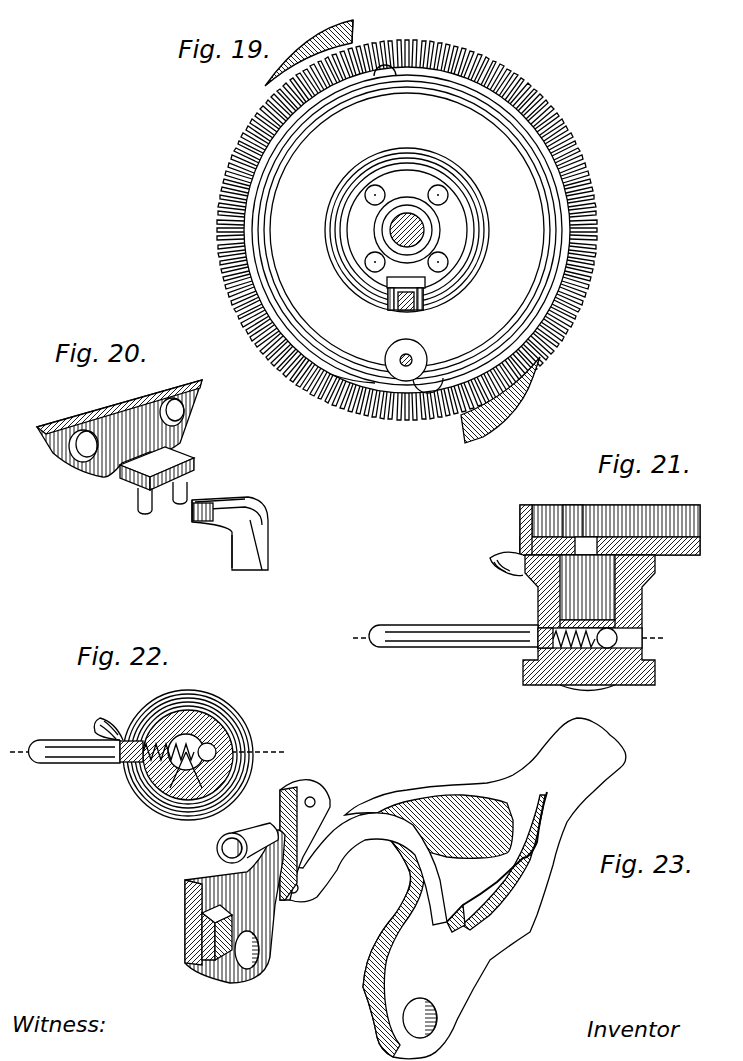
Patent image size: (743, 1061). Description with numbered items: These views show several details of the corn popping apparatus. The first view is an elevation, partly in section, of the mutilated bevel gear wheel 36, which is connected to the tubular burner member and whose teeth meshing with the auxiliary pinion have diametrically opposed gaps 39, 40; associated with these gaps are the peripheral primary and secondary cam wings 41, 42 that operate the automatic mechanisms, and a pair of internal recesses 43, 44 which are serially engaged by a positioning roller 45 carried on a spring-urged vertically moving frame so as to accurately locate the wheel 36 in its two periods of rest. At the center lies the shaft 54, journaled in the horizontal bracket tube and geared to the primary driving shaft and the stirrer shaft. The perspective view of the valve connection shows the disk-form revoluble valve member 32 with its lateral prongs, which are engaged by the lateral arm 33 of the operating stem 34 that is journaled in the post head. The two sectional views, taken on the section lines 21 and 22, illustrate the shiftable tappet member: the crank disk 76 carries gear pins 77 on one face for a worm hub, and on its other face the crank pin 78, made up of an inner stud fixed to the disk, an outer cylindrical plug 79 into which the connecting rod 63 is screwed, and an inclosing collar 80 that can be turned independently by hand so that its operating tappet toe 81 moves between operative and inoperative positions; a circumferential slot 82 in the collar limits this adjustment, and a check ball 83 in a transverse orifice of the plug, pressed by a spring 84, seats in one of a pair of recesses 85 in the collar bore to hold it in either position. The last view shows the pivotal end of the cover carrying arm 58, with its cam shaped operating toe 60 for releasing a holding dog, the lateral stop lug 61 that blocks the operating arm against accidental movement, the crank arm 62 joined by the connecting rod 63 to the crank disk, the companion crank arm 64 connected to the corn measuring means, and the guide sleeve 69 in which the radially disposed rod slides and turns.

In FIG. 22, the section line 21— 21 is at (147, 754).
In FIG. 21, the section line 22— 22 is at (505, 639).
In FIG. 19, the revoluble valve member 32 is at (355, 222).
In FIG. 20, the revoluble valve member 32 is at (113, 407).
In FIG. 19, the lateral arm 33 is at (420, 305).
In FIG. 20, the lateral arm 33 is at (213, 497).
In FIG. 20, the operating stem 34 is at (272, 540).
In FIG. 19, the bevel gear wheel 36 is at (222, 219).
In FIG. 19, the gap 39 is at (428, 72).
In FIG. 19, the gap 40 is at (361, 385).
In FIG. 19, the primary cam wing 41 is at (339, 30).
In FIG. 19, the secondary cam wing 42 is at (490, 430).
In FIG. 19, the internal recess 43 is at (382, 80).
In FIG. 19, the internal recess 44 is at (432, 380).
In FIG. 19, the positioning roller 45 is at (401, 342).
In FIG. 19, the shaft 54 is at (415, 229).
In FIG. 23, the cover carrying arm 58 is at (477, 888).
In FIG. 23, the cam shaped operating toe 60 is at (185, 898).
In FIG. 23, the lateral stop lug 61 is at (185, 947).
In FIG. 23, the crank arm 62 is at (331, 797).
In FIG. 21, the connecting rod 63 is at (422, 625).
In FIG. 22, the connecting rod 63 is at (60, 764).
In FIG. 23, the companion crank arm 64 is at (364, 869).
In FIG. 23, the guide sleeve 69 is at (217, 850).
In FIG. 21, the crank disk 76 is at (652, 537).
In FIG. 21, the gear pins 77 is at (577, 505).
In FIG. 21, the crank pin 78 is at (587, 591).
In FIG. 22, the crank pin 78 is at (259, 698).
In FIG. 21, the cylindrical plug 79 is at (600, 688).
In FIG. 21, the inclosing collar 80 is at (643, 600).
In FIG. 21, the operating tappet toe 81 is at (492, 560).
In FIG. 22, the operating tappet toe 81 is at (102, 719).
In FIG. 22, the circumferential slot 82 is at (150, 706).
In FIG. 21, the check ball 83 is at (645, 655).
In FIG. 22, the check ball 83 is at (216, 746).
In FIG. 21, the spring 84 is at (554, 652).
In FIG. 22, the spring 84 is at (152, 762).
In FIG. 22, the recesses 85 is at (198, 714).